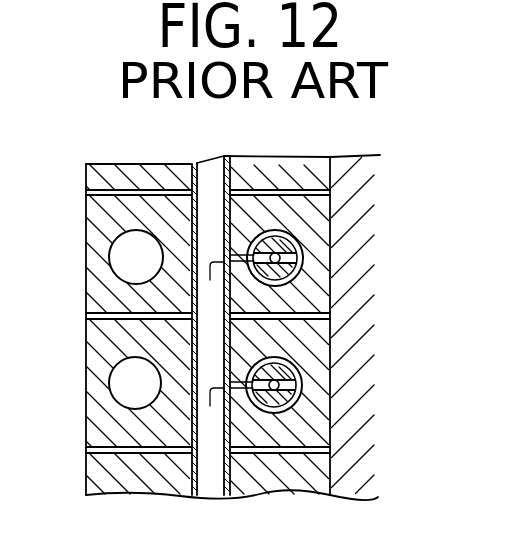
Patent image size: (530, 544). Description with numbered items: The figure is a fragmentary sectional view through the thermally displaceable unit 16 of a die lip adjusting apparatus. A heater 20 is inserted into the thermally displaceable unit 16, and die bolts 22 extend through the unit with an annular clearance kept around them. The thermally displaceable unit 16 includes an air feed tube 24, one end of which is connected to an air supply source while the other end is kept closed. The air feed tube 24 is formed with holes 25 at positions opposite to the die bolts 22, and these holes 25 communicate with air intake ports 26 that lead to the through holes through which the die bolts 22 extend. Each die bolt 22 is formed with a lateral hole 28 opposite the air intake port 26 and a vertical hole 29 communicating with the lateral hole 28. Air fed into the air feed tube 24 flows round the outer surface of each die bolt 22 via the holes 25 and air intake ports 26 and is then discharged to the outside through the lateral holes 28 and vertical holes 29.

The thermally displaceable unit 16 is at (86, 385).
The heater 20 is at (125, 262).
The die bolt 22 is at (292, 290).
The air feed tube 24 is at (195, 178).
The hole 25 is at (227, 380).
The air intake port 26 is at (240, 254).
The lateral hole 28 is at (303, 246).
The vertical hole 29 is at (293, 276).